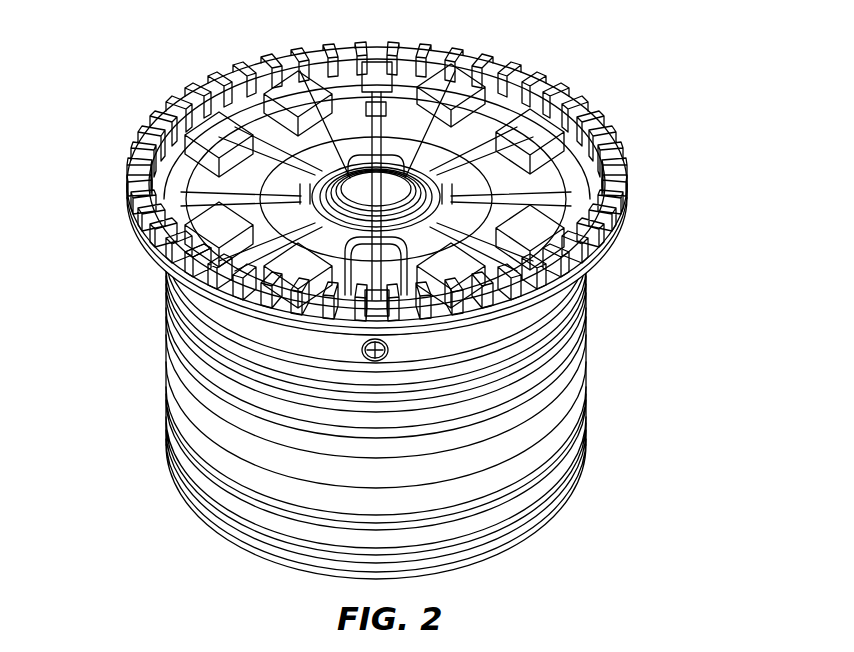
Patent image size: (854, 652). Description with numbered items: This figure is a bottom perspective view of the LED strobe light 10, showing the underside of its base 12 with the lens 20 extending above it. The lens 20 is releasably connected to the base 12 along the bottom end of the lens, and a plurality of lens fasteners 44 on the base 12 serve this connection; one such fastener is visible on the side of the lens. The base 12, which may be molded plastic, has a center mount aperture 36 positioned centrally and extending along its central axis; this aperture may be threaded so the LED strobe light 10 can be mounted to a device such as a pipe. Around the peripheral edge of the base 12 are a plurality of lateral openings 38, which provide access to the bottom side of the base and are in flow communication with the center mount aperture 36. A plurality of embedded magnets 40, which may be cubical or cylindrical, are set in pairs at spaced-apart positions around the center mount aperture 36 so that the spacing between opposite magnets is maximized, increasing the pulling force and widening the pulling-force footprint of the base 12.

The LED strobe light 10 is at (623, 83).
The base 12 is at (623, 153).
The lens 20 is at (587, 403).
The center mount aperture 36 is at (300, 71).
The lateral openings 38 is at (165, 264).
The embedded magnets 40 is at (527, 128).
The lens fasteners 44 is at (370, 352).